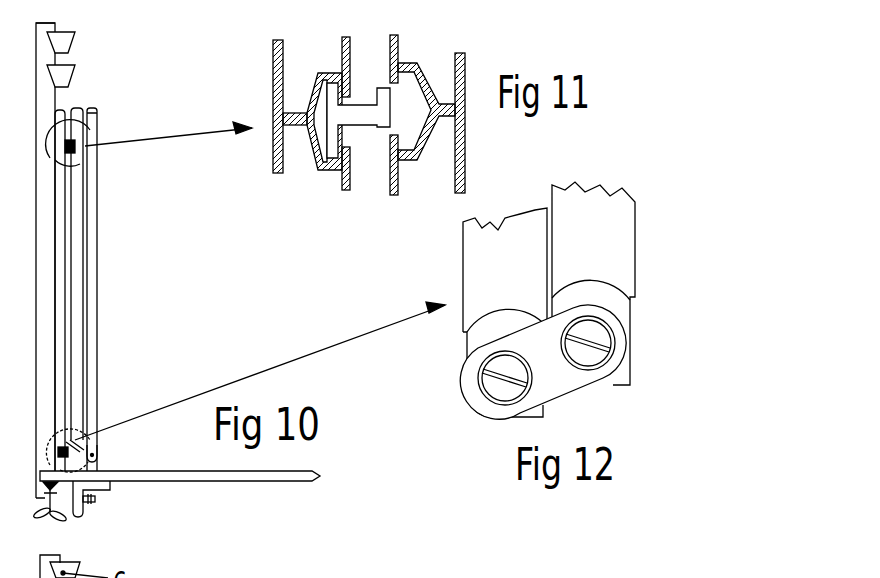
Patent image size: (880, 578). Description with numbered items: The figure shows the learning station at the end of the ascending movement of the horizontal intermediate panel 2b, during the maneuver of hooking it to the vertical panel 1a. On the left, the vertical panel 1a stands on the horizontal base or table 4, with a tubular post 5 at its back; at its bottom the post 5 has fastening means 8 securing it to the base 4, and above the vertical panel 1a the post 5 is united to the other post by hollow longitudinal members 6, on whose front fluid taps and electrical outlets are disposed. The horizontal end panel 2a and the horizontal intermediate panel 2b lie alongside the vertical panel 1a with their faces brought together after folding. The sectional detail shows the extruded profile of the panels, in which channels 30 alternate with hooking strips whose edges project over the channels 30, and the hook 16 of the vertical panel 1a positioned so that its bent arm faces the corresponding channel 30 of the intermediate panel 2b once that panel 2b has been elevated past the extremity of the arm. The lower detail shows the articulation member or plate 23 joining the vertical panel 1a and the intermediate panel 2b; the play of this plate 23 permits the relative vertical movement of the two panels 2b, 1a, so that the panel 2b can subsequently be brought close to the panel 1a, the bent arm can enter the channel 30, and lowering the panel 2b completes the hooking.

In FIG. 10, the vertical panel 1a is at (57, 285).
In FIG. 11, the vertical panel 1a is at (278, 90).
In FIG. 12, the vertical panel 1a is at (503, 272).
In FIG. 10, the horizontal end panel 2a is at (90, 178).
In FIG. 10, the horizontal intermediate panel 2b is at (76, 228).
In FIG. 11, the horizontal intermediate panel 2b is at (458, 165).
In FIG. 12, the horizontal intermediate panel 2b is at (594, 245).
In FIG. 10, the horizontal base or table 4 is at (178, 476).
In FIG. 10, the tubular post 5 is at (43, 98).
In FIG. 10, the hollow longitudinal member 6 is at (63, 75).
In FIG. 10, the fastening means 8 is at (55, 497).
In FIG. 11, the hook 16 is at (368, 115).
In FIG. 12, the articulation member or plate 23 is at (547, 372).
In FIG. 11, the channel 30 is at (408, 102).